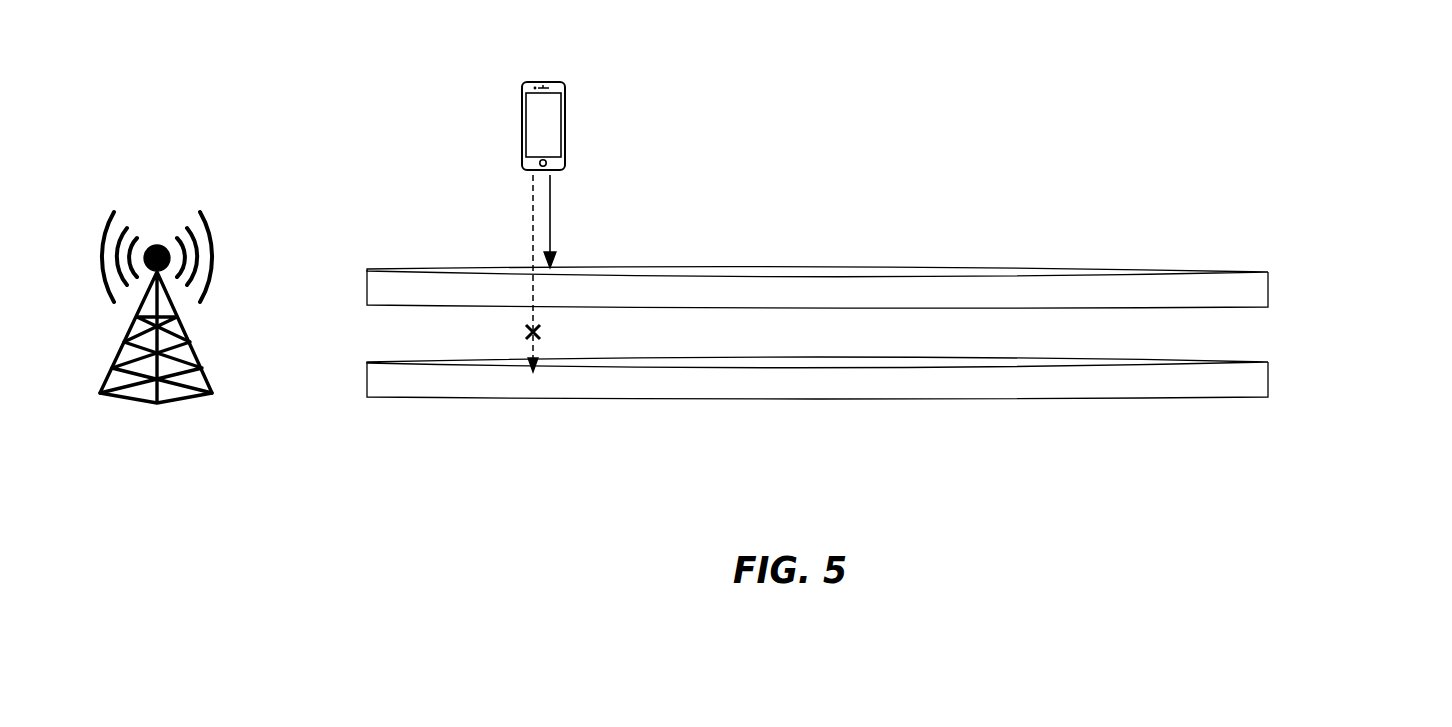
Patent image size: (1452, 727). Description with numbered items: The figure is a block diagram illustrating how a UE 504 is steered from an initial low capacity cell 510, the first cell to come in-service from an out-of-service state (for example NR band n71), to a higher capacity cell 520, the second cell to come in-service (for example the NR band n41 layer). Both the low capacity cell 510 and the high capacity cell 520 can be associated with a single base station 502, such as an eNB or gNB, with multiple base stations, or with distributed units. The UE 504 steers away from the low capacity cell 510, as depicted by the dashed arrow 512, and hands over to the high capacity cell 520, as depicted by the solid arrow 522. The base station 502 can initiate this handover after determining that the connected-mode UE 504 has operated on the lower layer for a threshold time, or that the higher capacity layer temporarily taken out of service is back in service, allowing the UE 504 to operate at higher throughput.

The base station 502 is at (157, 408).
The UE 504 is at (522, 83).
The low capacity cell 510 is at (1075, 403).
The dashed arrow 512 is at (533, 237).
The high capacity cell 520 is at (1241, 270).
The solid arrow 522 is at (553, 203).